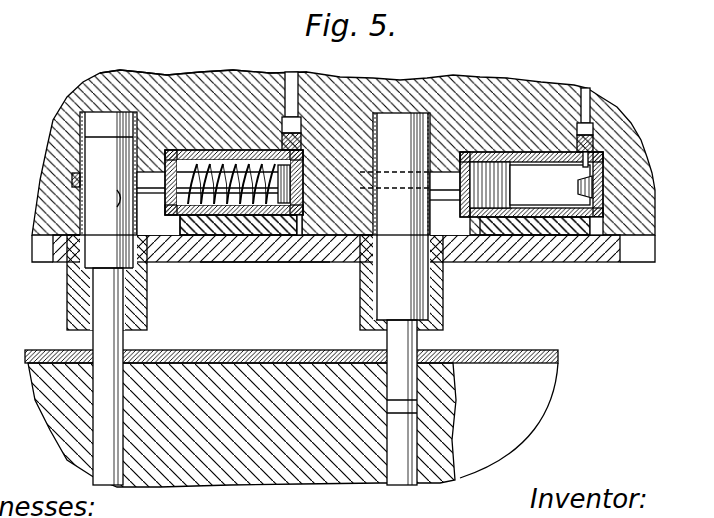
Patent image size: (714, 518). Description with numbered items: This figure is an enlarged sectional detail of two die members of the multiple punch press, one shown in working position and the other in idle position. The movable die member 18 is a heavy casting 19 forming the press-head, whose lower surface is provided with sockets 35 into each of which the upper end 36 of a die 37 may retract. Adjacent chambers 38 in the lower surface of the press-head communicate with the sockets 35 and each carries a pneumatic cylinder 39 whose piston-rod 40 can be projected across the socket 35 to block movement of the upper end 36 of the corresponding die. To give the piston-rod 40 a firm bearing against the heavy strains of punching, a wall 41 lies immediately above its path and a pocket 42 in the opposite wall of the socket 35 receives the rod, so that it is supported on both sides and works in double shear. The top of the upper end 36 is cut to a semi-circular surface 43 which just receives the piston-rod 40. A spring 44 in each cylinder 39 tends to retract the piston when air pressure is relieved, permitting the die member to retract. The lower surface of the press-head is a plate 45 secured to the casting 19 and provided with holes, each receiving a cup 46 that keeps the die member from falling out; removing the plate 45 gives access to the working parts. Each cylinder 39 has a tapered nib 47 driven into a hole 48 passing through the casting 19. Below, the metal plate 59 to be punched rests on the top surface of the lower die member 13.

The lower die member 13 is at (283, 483).
The movable die member 18 is at (654, 178).
The casting 19 is at (203, 78).
The socket 35 is at (407, 117).
The upper end of die 36 is at (90, 265).
The die 37 is at (117, 337).
The chamber 38 is at (302, 227).
The pneumatic cylinder 39 is at (257, 215).
The piston-rod 40 is at (160, 197).
The wall 41 is at (445, 170).
The pocket 42 is at (72, 178).
The semi-circular surface 43 is at (105, 150).
The spring 44 is at (220, 217).
The plate 45 is at (275, 257).
The cup 46 is at (137, 298).
The tapered nib 47 is at (586, 147).
The hole 48 is at (591, 122).
The metal plate 59 is at (291, 341).